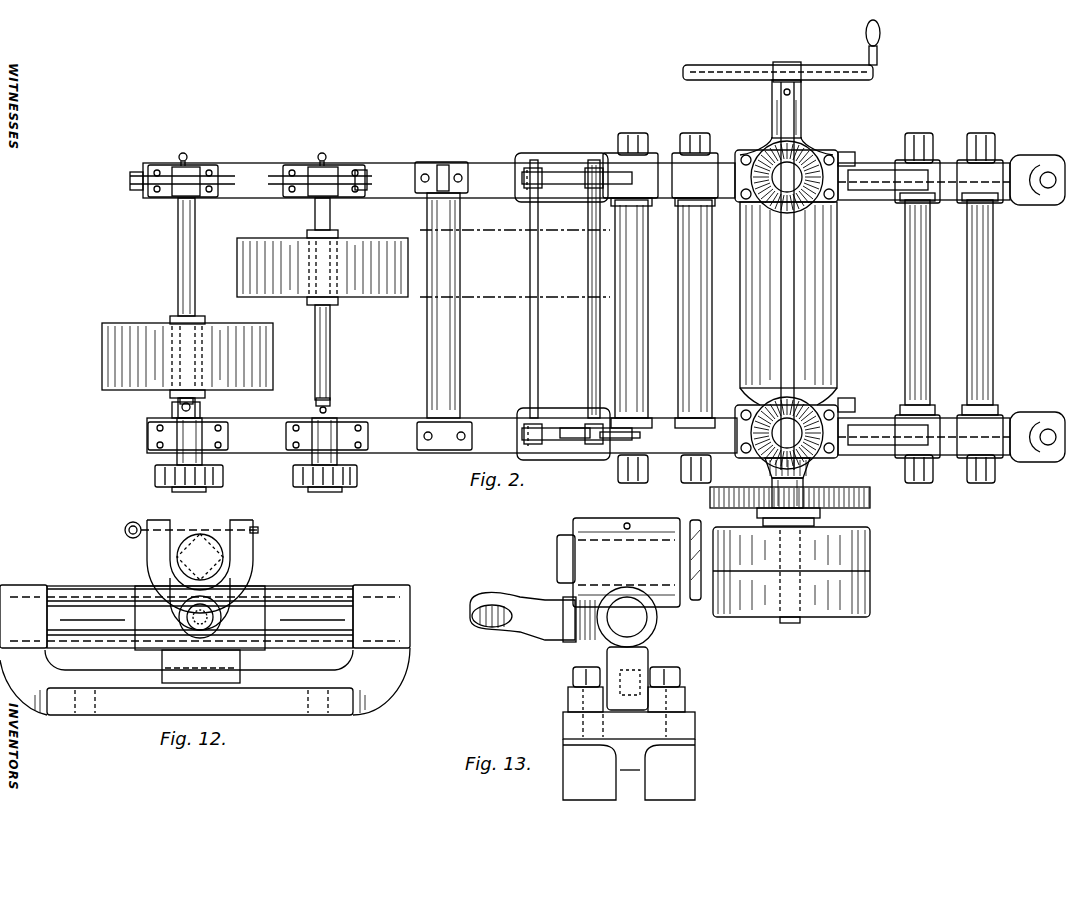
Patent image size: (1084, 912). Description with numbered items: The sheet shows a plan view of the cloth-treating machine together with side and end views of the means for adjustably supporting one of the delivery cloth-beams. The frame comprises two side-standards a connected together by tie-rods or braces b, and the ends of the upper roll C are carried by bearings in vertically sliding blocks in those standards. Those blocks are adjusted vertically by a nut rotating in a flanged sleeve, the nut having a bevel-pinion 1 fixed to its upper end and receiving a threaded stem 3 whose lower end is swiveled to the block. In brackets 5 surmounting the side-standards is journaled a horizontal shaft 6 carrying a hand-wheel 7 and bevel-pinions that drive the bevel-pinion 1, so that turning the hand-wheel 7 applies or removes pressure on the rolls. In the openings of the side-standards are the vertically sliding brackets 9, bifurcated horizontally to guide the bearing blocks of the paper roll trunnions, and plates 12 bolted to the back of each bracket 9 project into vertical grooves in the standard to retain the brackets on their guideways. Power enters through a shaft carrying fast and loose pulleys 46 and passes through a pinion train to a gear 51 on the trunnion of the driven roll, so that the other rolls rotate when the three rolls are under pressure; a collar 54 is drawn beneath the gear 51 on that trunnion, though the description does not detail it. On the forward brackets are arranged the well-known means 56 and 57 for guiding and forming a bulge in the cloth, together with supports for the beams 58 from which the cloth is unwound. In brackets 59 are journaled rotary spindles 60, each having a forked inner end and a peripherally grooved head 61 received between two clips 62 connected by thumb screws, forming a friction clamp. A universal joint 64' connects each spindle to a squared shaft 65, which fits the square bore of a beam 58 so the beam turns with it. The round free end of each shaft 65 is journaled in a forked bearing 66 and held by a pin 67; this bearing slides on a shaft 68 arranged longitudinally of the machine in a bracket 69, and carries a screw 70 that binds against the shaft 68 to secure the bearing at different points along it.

In FIG. 2, the bevel-pinion 1 is at (755, 205).
In FIG. 2, the threaded stem 3 is at (766, 462).
In FIG. 2, the brackets 5 is at (812, 148).
In FIG. 2, the horizontal shaft 6 is at (795, 362).
In FIG. 2, the hand-wheel 7 is at (840, 80).
In FIG. 2, the vertically sliding brackets 9 is at (832, 410).
In FIG. 2, the plates 12 is at (852, 406).
In FIG. 2, the fast and loose pulleys 46 is at (871, 565).
In FIG. 2, the gear 51 is at (872, 498).
In FIG. 2, the collar 54 is at (822, 514).
In FIG. 2, the cloth guiding and bulge-forming means 56 is at (460, 378).
In FIG. 2, the cloth guiding and bulge-forming means 57 is at (539, 366).
In FIG. 2, the beams 58 is at (203, 325).
In FIG. 2, the brackets 59 is at (180, 420).
In FIG. 2, the rotary spindles 60 is at (200, 410).
In FIG. 2, the peripherally grooved head 61 is at (318, 490).
In FIG. 2, the clips 62 is at (210, 488).
In FIG. 2, the universal joint 64' is at (322, 305).
In FIG. 2, the squared shaft 65 is at (195, 281).
In FIG. 13, the squared shaft 65 is at (693, 517).
In FIG. 2, the forked bearing 66 is at (205, 172).
In FIG. 12, the forked bearing 66 is at (250, 592).
In FIG. 2, the pin 67 is at (330, 172).
In FIG. 12, the pin 67 is at (183, 525).
In FIG. 2, the shaft 68 is at (172, 175).
In FIG. 12, the shaft 68 is at (305, 605).
In FIG. 13, the shaft 68 is at (618, 582).
In FIG. 2, the bracket 69 is at (368, 172).
In FIG. 12, the bracket 69 is at (395, 680).
In FIG. 13, the bracket 69 is at (650, 655).
In FIG. 2, the screw 70 is at (320, 162).
In FIG. 12, the screw 70 is at (185, 630).
In FIG. 13, the screw 70 is at (515, 635).
In FIG. 2, the side-standards a is at (951, 314).
In FIG. 2, the tie-rods or braces b is at (650, 342).
In FIG. 2, the upper roll C is at (488, 162).
In FIG. 13, the upper roll C is at (696, 745).